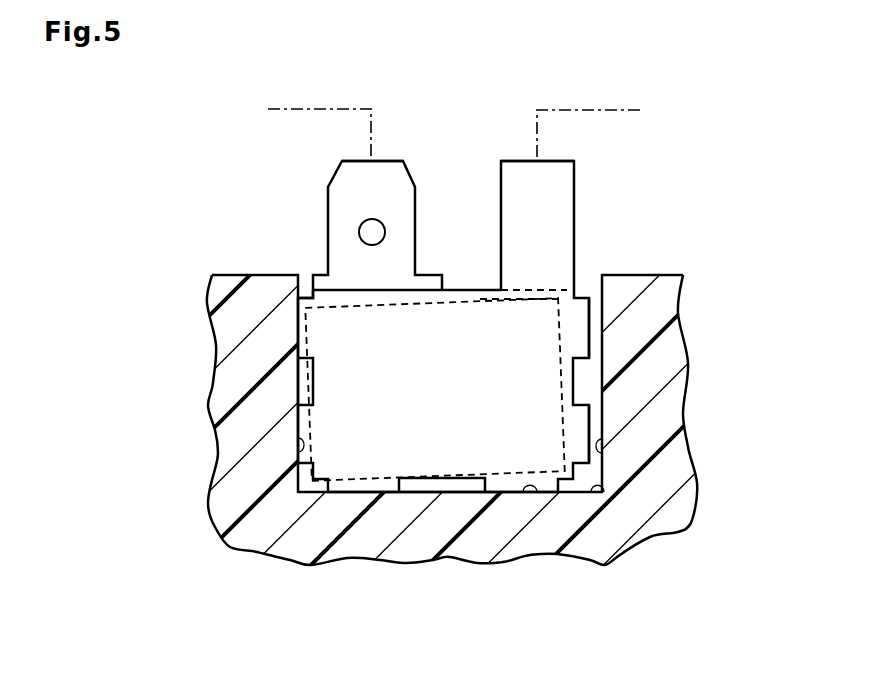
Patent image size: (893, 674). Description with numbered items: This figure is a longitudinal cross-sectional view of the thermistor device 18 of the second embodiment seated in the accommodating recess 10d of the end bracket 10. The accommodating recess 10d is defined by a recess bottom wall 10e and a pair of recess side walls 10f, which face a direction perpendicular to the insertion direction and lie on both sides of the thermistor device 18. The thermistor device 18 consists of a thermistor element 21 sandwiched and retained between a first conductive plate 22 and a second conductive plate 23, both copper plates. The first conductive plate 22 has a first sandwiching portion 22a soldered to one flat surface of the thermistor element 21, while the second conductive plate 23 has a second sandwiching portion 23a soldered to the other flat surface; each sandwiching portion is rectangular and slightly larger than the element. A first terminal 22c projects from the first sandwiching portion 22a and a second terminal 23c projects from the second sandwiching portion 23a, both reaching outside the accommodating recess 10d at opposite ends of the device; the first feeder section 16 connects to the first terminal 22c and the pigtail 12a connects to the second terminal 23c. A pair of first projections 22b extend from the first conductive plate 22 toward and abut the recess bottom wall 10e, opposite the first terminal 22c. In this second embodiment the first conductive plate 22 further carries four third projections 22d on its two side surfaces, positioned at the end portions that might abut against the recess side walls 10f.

The end bracket 10 is at (673, 275).
The accommodating recess 10d is at (598, 493).
The recess bottom wall 10e is at (533, 493).
The recess side walls 10f is at (297, 452).
The pigtail 12a is at (293, 110).
The first feeder section 16 is at (629, 110).
The thermistor device 18 is at (457, 372).
The thermistor element 21 is at (478, 298).
The first conductive plate 22 is at (457, 372).
The first sandwiching portion 22a is at (324, 284).
The first projections 22b is at (518, 493).
The first terminal 22c is at (510, 161).
The third projections 22d is at (298, 337).
The second conductive plate 23 is at (436, 297).
The second sandwiching portion 23a is at (547, 283).
The second terminal 23c is at (388, 160).